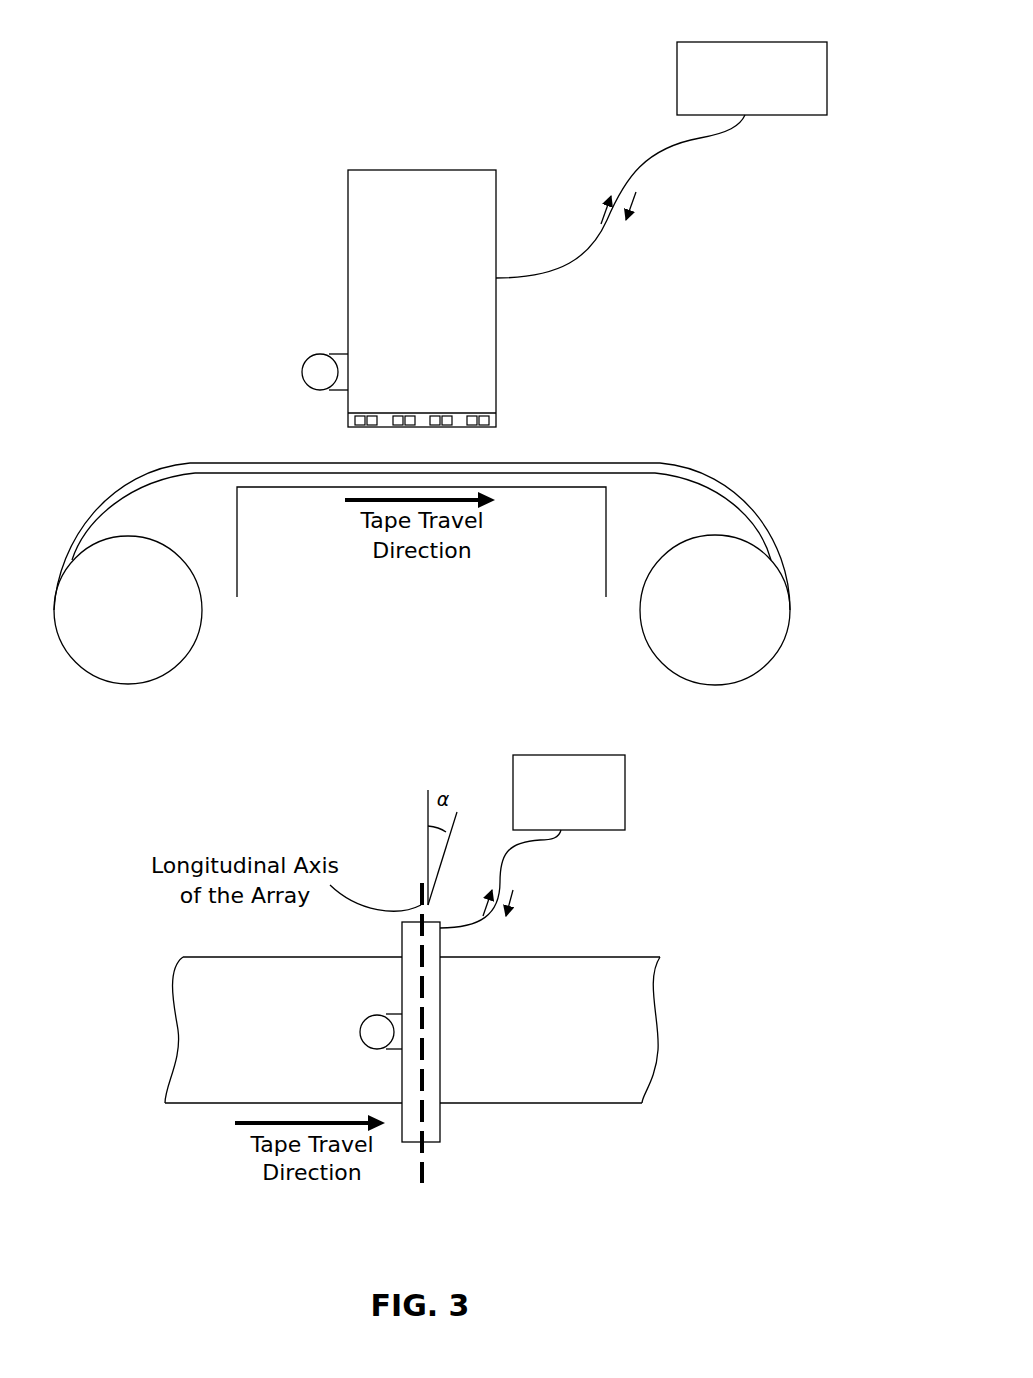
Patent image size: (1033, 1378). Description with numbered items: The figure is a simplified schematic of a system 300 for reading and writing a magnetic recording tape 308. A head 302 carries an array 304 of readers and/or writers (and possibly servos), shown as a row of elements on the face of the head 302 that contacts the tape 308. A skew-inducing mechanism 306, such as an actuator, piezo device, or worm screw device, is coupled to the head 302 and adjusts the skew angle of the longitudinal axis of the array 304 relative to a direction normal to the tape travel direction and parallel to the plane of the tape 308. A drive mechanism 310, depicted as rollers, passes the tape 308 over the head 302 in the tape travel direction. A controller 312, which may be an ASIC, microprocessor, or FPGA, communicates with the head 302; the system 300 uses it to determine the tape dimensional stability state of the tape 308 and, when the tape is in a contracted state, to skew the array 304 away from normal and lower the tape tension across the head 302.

The system 300 is at (192, 213).
The head 302 is at (403, 206).
The array 304 is at (478, 440).
The skew-inducing mechanism 306 is at (302, 362).
The magnetic recording tape 308 is at (110, 490).
The drive mechanism 310 is at (109, 620).
The controller 312 is at (733, 90).